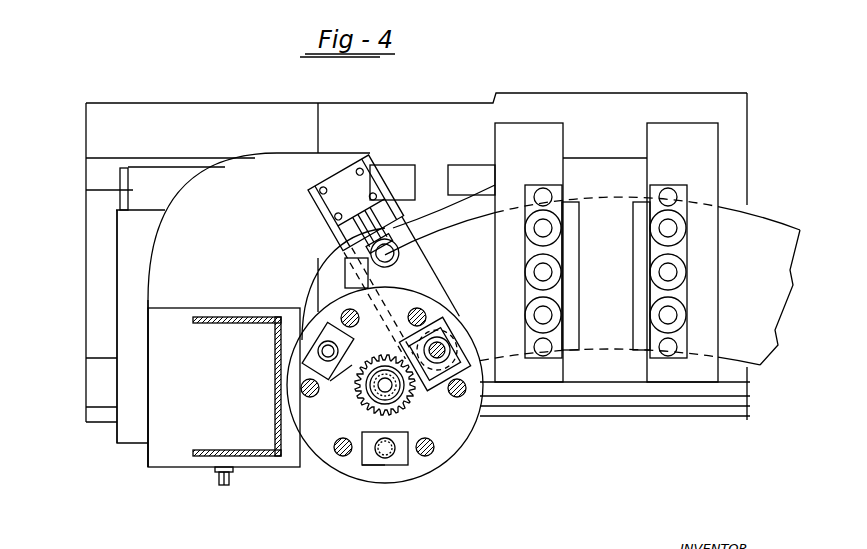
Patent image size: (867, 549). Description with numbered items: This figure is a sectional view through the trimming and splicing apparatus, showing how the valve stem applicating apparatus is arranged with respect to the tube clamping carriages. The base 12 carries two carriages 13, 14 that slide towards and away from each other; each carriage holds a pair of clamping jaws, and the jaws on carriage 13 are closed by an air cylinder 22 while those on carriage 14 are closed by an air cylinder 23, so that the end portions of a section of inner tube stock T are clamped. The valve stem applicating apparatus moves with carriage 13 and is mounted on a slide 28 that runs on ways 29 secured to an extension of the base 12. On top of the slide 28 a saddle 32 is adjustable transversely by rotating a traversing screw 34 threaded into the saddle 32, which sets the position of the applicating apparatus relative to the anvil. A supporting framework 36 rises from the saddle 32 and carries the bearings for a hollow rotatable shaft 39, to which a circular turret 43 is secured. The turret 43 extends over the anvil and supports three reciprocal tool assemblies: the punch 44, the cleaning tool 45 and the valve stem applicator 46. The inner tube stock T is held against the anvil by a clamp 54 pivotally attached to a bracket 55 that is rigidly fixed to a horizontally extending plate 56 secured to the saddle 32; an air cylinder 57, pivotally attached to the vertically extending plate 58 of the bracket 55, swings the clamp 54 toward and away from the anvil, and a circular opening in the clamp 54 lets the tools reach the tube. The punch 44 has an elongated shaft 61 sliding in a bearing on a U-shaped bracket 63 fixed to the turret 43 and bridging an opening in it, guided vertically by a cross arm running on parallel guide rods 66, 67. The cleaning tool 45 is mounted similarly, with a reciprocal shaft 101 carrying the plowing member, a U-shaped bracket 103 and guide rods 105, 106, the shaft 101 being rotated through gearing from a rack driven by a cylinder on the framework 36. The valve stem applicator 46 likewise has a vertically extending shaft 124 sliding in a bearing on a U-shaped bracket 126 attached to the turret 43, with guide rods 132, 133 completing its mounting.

The base 12 is at (636, 418).
The carriage 13 is at (537, 380).
The carriage 14 is at (694, 378).
The inner tube stock T is at (572, 346).
The air cylinder 22 is at (561, 284).
The air cylinder 23 is at (648, 278).
The slide 28 is at (120, 192).
The ways 29 is at (86, 184).
The saddle 32 is at (117, 296).
The traversing screw 34 is at (222, 488).
The supporting framework 36 is at (228, 306).
The hollow rotatable shaft 39 is at (400, 390).
The turret 43 is at (431, 482).
The punch tool assembly 44 is at (381, 470).
The cleaning tool assembly 45 is at (470, 353).
The valve stem applicator assembly 46 is at (283, 416).
The clamp 54 is at (420, 248).
The bracket 55 is at (372, 170).
The horizontally extending plate 56 is at (266, 160).
The air cylinder 57 is at (413, 214).
The vertically extending plate 58 is at (340, 220).
The elongated shaft 61 is at (388, 460).
The U-shaped bracket 63 is at (365, 464).
The guide rod 66 is at (338, 456).
The guide rod 67 is at (430, 452).
The reciprocal shaft 101 is at (443, 318).
The U-shaped bracket 103 is at (448, 346).
The guide rod 105 is at (467, 388).
The guide rod 106 is at (438, 276).
The vertically extending shaft 124 is at (322, 347).
The U-shaped bracket 126 is at (330, 381).
The guide rod 132 is at (345, 310).
The guide rod 133 is at (300, 388).